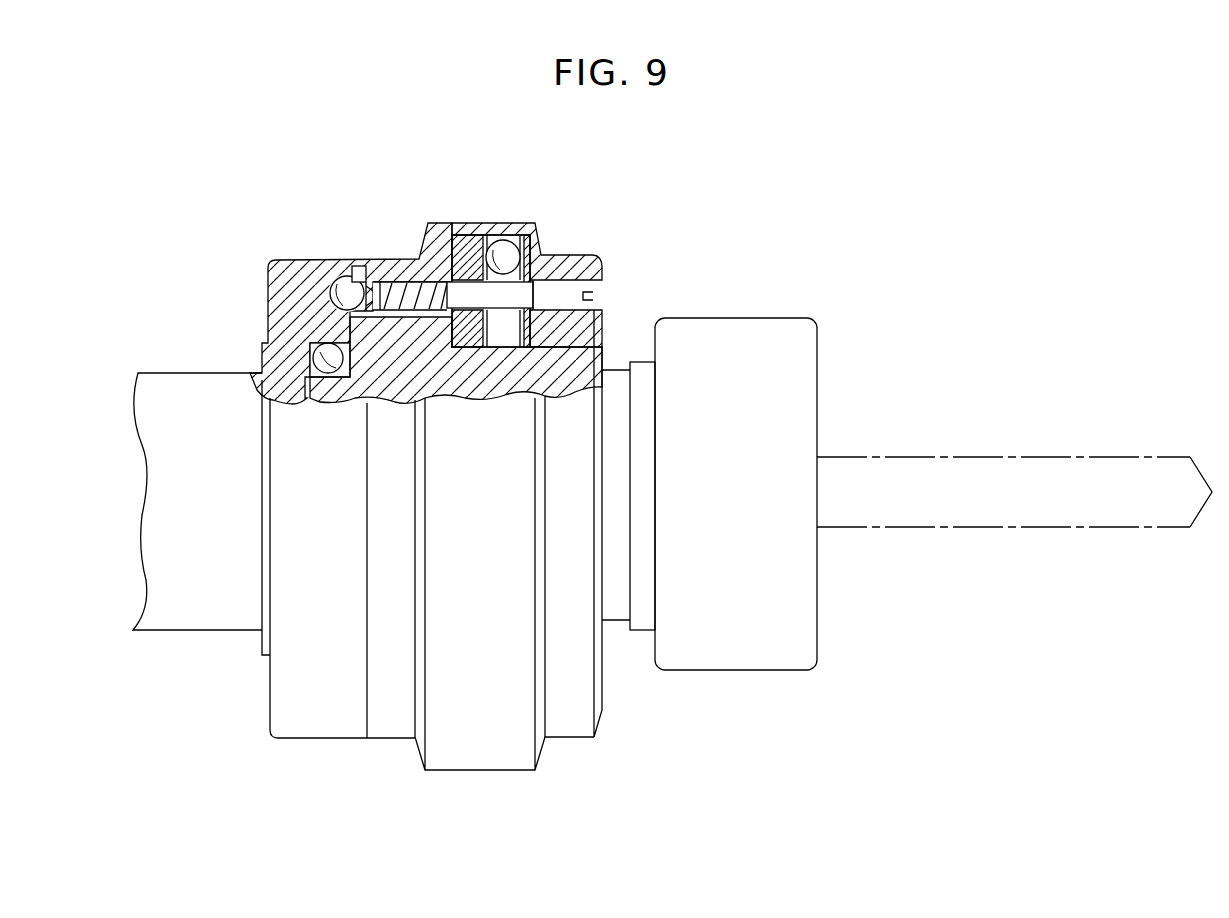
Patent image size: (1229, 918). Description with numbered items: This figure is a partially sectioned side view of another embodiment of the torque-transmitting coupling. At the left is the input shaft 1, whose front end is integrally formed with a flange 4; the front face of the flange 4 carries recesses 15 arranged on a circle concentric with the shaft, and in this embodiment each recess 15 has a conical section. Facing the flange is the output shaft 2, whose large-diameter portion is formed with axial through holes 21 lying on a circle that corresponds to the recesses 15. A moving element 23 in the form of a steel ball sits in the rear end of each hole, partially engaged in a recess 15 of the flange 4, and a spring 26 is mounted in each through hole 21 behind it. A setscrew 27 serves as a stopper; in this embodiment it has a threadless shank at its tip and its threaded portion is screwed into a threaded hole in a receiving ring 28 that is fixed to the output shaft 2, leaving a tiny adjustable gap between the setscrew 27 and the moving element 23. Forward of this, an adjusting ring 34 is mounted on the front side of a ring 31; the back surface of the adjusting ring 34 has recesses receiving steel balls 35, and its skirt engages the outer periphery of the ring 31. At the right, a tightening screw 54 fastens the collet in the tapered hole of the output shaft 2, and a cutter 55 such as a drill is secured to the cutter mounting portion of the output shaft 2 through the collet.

The input shaft 1 is at (188, 393).
The output shaft 2 is at (606, 318).
The flange 4 is at (280, 258).
The recesses 15 is at (332, 290).
The axial through holes 21 is at (372, 273).
The moving element 23 is at (340, 280).
The spring 26 is at (403, 284).
The setscrew 27 is at (512, 298).
The receiving ring 28 is at (570, 723).
The ring 31 is at (465, 247).
The adjusting ring 34 is at (538, 238).
The steel balls 35 is at (505, 253).
The tightening screw 54 is at (802, 373).
The cutter 55 is at (1040, 457).